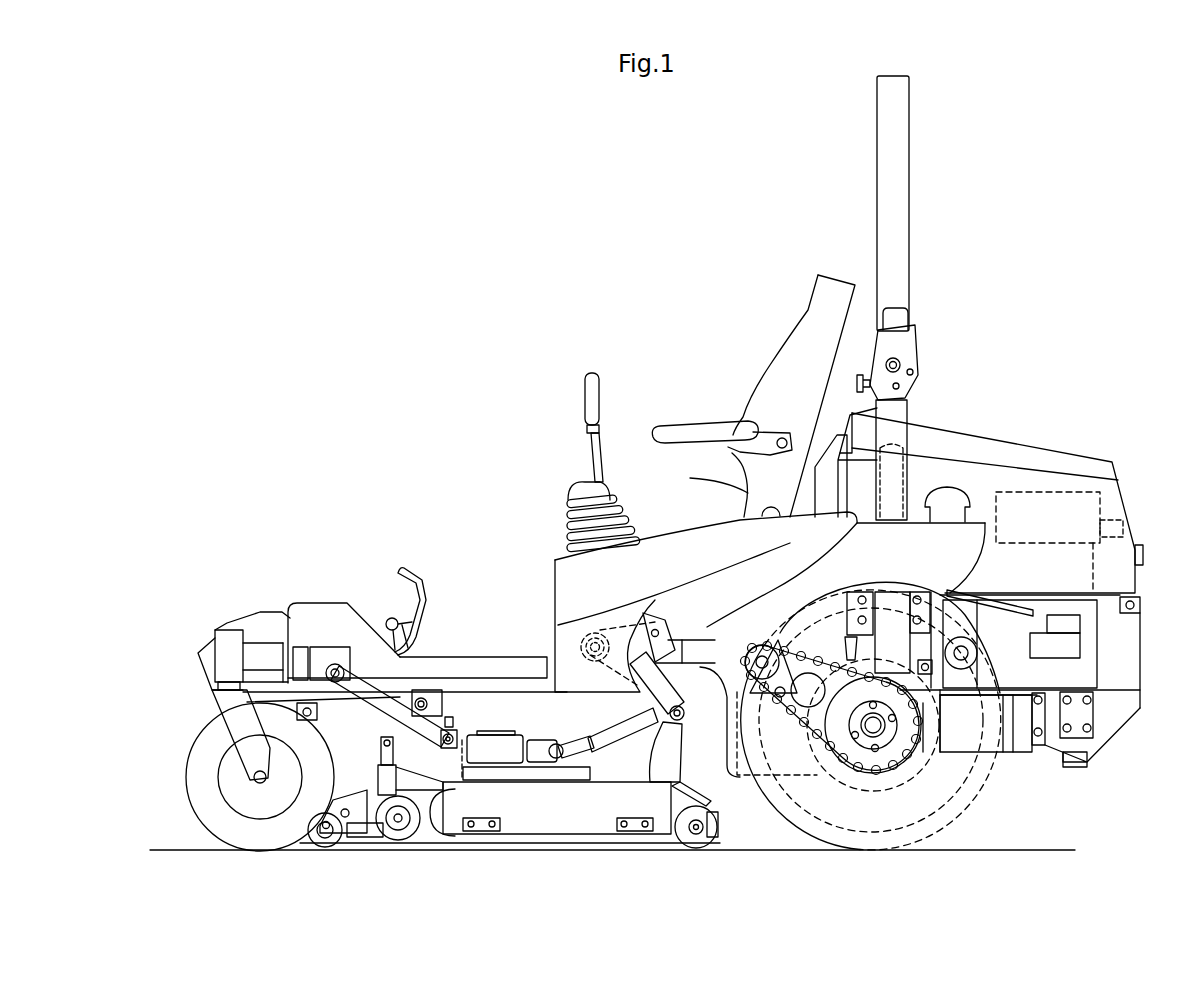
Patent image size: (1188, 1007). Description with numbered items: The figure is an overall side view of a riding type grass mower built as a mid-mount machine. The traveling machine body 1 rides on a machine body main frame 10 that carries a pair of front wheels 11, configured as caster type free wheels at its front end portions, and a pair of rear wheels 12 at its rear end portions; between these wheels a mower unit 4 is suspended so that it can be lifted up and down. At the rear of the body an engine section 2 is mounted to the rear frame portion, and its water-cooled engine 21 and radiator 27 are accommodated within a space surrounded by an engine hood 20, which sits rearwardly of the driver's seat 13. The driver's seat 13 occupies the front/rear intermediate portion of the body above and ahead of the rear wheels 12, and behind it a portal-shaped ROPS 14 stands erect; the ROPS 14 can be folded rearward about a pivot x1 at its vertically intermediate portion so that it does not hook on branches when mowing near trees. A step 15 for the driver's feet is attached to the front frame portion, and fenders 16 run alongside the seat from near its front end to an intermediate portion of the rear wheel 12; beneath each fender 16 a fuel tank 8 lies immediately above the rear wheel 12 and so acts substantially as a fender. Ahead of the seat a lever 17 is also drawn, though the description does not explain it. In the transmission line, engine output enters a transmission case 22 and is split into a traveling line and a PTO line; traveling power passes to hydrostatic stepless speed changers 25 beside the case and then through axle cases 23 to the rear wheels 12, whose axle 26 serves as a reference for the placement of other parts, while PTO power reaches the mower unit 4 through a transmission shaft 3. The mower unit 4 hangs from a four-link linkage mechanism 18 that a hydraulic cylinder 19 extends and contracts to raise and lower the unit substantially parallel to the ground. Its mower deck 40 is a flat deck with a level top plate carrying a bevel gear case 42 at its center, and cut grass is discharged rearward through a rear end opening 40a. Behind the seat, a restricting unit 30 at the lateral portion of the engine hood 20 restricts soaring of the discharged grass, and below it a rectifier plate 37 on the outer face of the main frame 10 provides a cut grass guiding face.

The traveling machine body 1 is at (335, 548).
The engine section 2 is at (1017, 437).
The transmission shaft 3 is at (610, 735).
The mower unit 4 is at (582, 825).
The fuel tank 8 is at (866, 528).
The machine body main frame 10 is at (508, 665).
The front wheel 11 is at (195, 788).
The rear wheel 12 is at (1000, 795).
The driver's seat 13 is at (760, 375).
The ROPS 14 is at (910, 155).
The step 15 is at (458, 650).
The fender 16 is at (656, 536).
The control lever 17 is at (586, 408).
The linkage mechanism 18 is at (385, 712).
The hydraulic cylinder 19 is at (665, 640).
The engine hood 20 is at (1118, 488).
The water-cooled engine 21 is at (1098, 670).
The transmission case 22 is at (790, 790).
The axle case 23 is at (897, 760).
The hydrostatic stepless speed changer 25 is at (832, 707).
The axle 26 is at (873, 735).
The radiator 27 is at (905, 470).
The restricting unit 30 is at (1005, 597).
The rectifier plate 37 is at (985, 742).
The mower deck 40 is at (530, 815).
The rear end opening 40a is at (730, 820).
The bevel gear case 42 is at (500, 745).
The pivot x1 is at (898, 360).